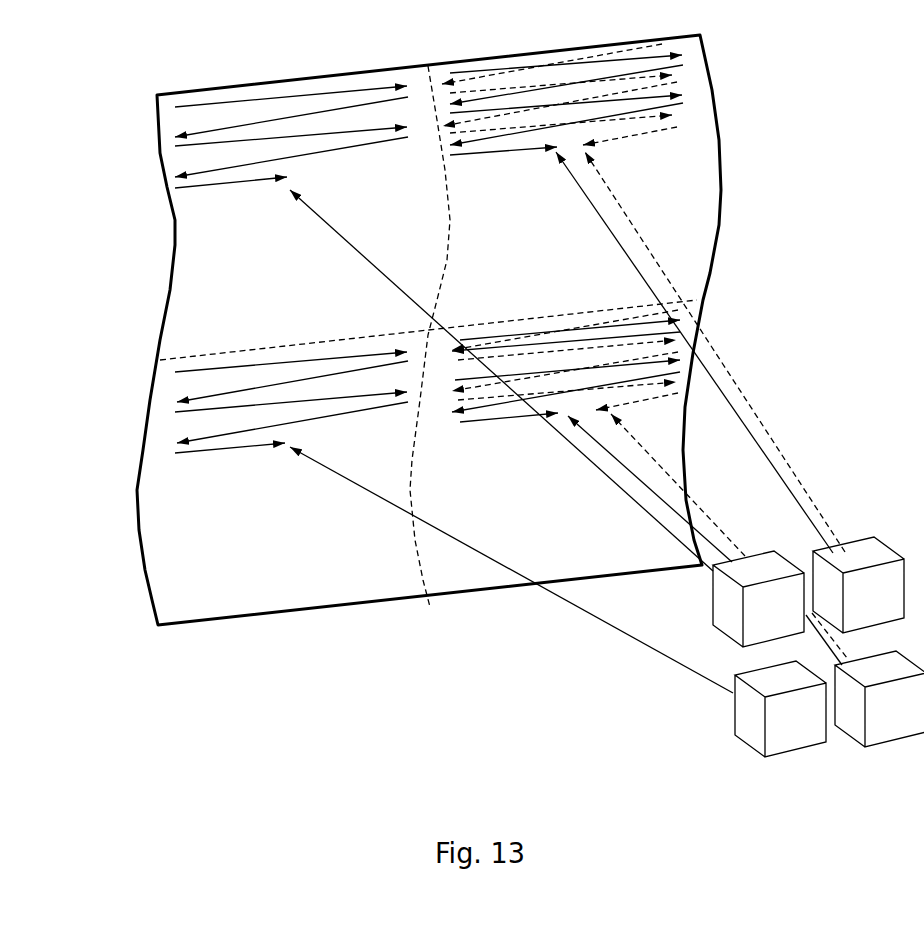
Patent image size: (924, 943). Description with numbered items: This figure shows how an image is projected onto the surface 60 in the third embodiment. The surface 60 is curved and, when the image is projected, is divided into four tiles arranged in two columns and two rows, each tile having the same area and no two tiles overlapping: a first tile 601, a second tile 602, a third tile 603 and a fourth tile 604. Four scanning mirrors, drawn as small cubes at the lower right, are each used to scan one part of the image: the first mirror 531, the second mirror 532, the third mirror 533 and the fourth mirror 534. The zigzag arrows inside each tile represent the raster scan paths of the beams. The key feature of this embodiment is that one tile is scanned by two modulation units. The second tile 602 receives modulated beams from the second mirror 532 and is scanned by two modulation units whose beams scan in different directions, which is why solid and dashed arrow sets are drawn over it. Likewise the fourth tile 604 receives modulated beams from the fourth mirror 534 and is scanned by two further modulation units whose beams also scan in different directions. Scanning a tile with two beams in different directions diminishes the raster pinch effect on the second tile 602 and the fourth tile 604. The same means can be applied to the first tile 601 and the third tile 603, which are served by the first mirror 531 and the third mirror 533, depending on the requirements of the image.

The surface 60 is at (394, 330).
The first tile 601 is at (291, 210).
The second tile 602 is at (562, 175).
The third tile 603 is at (291, 476).
The fourth tile 604 is at (561, 444).
The first mirror 531 is at (568, 427).
The second mirror 532 is at (730, 392).
The third mirror 533 is at (558, 602).
The fourth mirror 534 is at (879, 699).